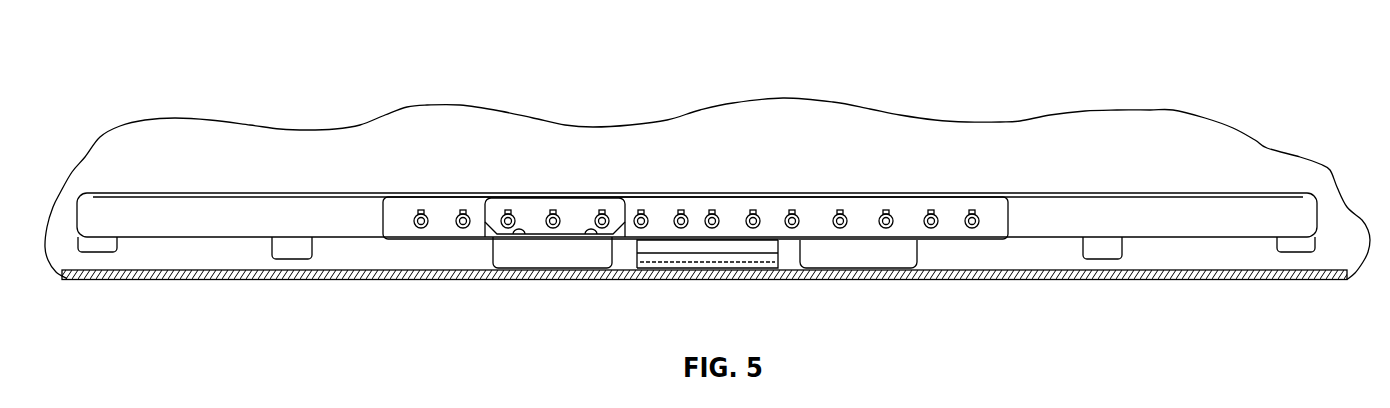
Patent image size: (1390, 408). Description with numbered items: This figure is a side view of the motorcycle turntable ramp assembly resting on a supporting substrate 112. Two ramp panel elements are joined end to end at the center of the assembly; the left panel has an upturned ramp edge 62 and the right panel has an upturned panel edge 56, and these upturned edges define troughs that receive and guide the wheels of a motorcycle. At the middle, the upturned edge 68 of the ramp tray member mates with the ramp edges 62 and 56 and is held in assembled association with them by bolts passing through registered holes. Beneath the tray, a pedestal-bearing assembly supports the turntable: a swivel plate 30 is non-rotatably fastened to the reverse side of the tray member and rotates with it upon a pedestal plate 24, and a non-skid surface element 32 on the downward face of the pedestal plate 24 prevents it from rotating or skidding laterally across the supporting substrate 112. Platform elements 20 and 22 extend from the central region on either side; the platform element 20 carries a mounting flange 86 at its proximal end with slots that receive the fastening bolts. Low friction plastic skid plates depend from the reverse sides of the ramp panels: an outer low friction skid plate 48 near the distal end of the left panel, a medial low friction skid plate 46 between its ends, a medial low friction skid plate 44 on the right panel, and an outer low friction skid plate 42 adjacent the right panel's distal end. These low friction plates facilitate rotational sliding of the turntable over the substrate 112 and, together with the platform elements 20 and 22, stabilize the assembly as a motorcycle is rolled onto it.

The supporting substrate 112 is at (790, 100).
The upturned ramp edge 62 is at (252, 207).
The upturned panel edge 56 is at (1114, 209).
The upturned edge of tray member 68 is at (397, 206).
The mounting flange 86 is at (578, 206).
The platform element 20 is at (553, 258).
The swivel plate 30 is at (640, 248).
The pedestal plate 24 is at (671, 262).
The non-skid surface element 32 is at (757, 278).
The platform element 22 is at (878, 262).
The outer low friction skid plate 48 is at (97, 252).
The medial low friction skid plate 46 is at (292, 260).
The medial low friction skid plate 44 is at (1101, 260).
The outer low friction skid plate 42 is at (1301, 253).